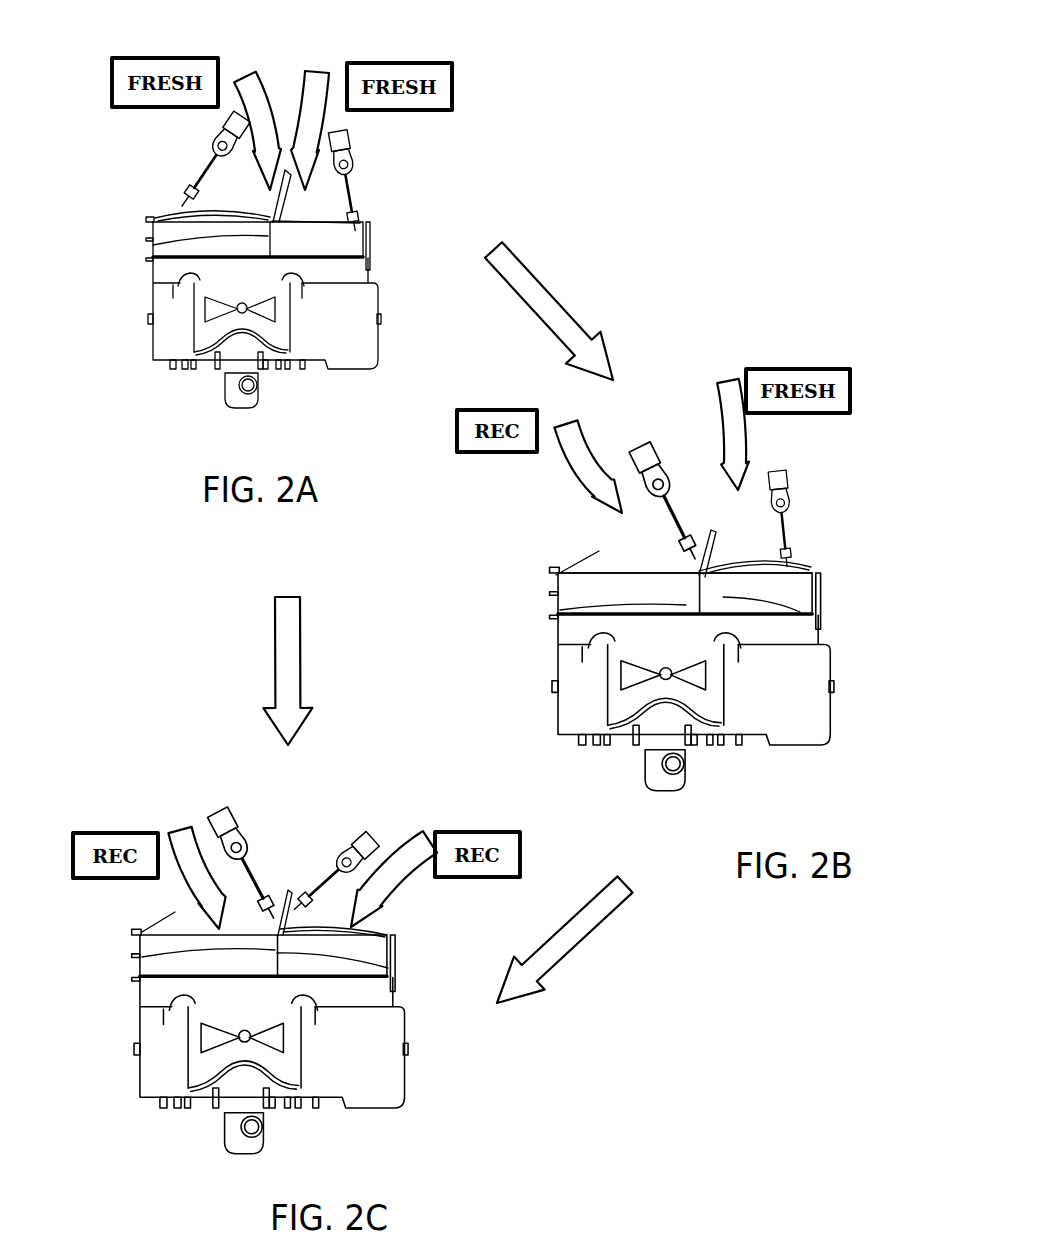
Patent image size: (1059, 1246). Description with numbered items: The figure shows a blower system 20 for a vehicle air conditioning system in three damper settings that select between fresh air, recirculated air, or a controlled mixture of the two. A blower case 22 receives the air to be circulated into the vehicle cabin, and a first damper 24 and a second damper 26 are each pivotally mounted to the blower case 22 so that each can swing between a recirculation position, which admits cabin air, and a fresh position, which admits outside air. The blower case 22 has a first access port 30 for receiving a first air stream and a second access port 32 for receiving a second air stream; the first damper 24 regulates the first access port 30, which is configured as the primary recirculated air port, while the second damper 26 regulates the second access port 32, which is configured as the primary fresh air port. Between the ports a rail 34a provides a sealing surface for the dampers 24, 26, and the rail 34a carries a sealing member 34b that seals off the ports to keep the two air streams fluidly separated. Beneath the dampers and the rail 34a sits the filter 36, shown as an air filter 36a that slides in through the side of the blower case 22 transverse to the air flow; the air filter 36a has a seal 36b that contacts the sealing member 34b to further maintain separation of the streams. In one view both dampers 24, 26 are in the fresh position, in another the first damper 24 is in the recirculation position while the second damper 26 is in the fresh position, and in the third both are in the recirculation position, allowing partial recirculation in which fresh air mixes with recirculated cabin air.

In FIG. 2A, the blower system 20 is at (110, 314).
In FIG. 2B, the blower system 20 is at (838, 612).
In FIG. 2C, the blower system 20 is at (83, 1043).
In FIG. 2A, the blower case 22 is at (380, 332).
In FIG. 2B, the blower case 22 is at (835, 717).
In FIG. 2C, the blower case 22 is at (408, 1093).
In FIG. 2A, the first damper 24 is at (205, 178).
In FIG. 2B, the first damper 24 is at (674, 509).
In FIG. 2C, the first damper 24 is at (253, 873).
In FIG. 2A, the second damper 26 is at (345, 205).
In FIG. 2B, the second damper 26 is at (784, 540).
In FIG. 2C, the second damper 26 is at (313, 887).
In FIG. 2B, the first access port 30 is at (650, 552).
In FIG. 2B, the second access port 32 is at (755, 552).
In FIG. 2A, the rail 34a is at (284, 170).
In FIG. 2B, the rail 34a is at (709, 528).
In FIG. 2C, the rail 34a is at (288, 890).
In FIG. 2A, the sealing member 34b is at (158, 216).
In FIG. 2B, the sealing member 34b is at (808, 565).
In FIG. 2C, the sealing member 34b is at (355, 927).
In FIG. 2A, the filter 36 is at (347, 238).
In FIG. 2C, the filter 36 is at (152, 953).
In FIG. 2B, the air filter 36a is at (557, 596).
In FIG. 2A, the seal 36b is at (153, 243).
In FIG. 2B, the seal 36b is at (800, 612).
In FIG. 2C, the seal 36b is at (388, 968).